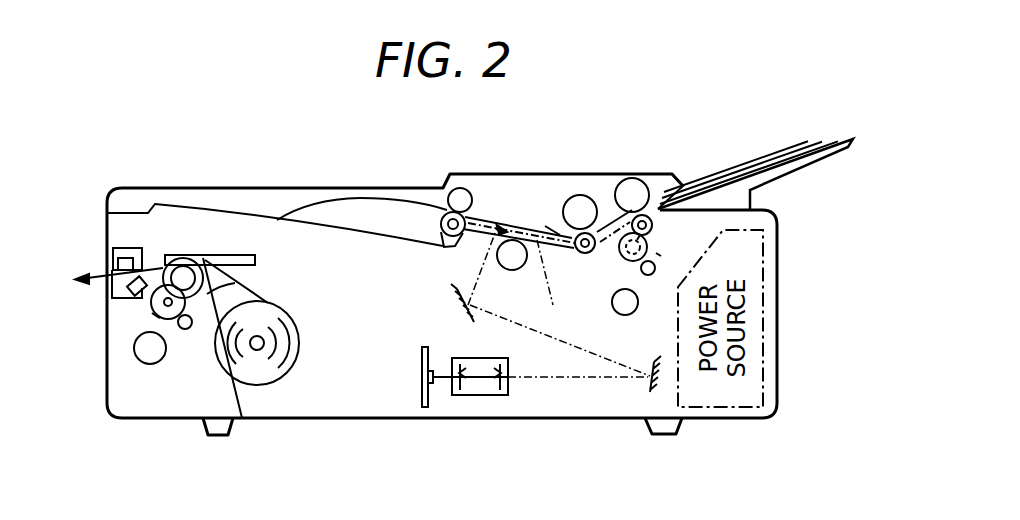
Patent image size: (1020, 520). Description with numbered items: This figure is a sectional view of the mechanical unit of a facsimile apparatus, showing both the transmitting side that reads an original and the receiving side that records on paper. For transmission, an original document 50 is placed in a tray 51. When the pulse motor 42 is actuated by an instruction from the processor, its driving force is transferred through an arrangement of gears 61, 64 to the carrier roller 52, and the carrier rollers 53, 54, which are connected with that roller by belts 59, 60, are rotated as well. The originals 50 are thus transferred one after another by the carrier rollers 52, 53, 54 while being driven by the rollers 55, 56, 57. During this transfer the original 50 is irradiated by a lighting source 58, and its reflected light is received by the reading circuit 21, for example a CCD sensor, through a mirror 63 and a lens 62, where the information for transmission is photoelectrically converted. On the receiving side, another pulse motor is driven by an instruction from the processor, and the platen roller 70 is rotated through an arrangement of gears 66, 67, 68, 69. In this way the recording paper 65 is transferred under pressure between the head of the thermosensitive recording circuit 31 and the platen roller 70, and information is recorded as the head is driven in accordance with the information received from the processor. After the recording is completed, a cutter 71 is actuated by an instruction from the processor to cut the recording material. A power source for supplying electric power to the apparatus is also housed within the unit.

The reading circuit 21 is at (431, 396).
The thermosensitive recording circuit 31 is at (212, 256).
The pulse motor 42 is at (616, 312).
The original document 50 is at (737, 158).
The tray 51 is at (807, 173).
The carrier roller 52 is at (148, 365).
The carrier roller 53 is at (557, 233).
The carrier roller 54 is at (445, 241).
The roller 55 is at (620, 178).
The roller 56 is at (575, 195).
The roller 57 is at (459, 188).
The lighting source 58 is at (515, 262).
The belt 59 is at (554, 288).
The belt 60 is at (587, 254).
The gear 61 is at (651, 277).
The lens 62 is at (622, 262).
The mirror 63 is at (456, 304).
The gear 64 is at (653, 227).
The recording paper 65 is at (300, 334).
The gear 66 is at (184, 330).
The gear 67 is at (160, 318).
The gear 68 is at (155, 305).
The gear 69 is at (235, 283).
The platen roller 70 is at (214, 258).
The cutter 71 is at (122, 250).